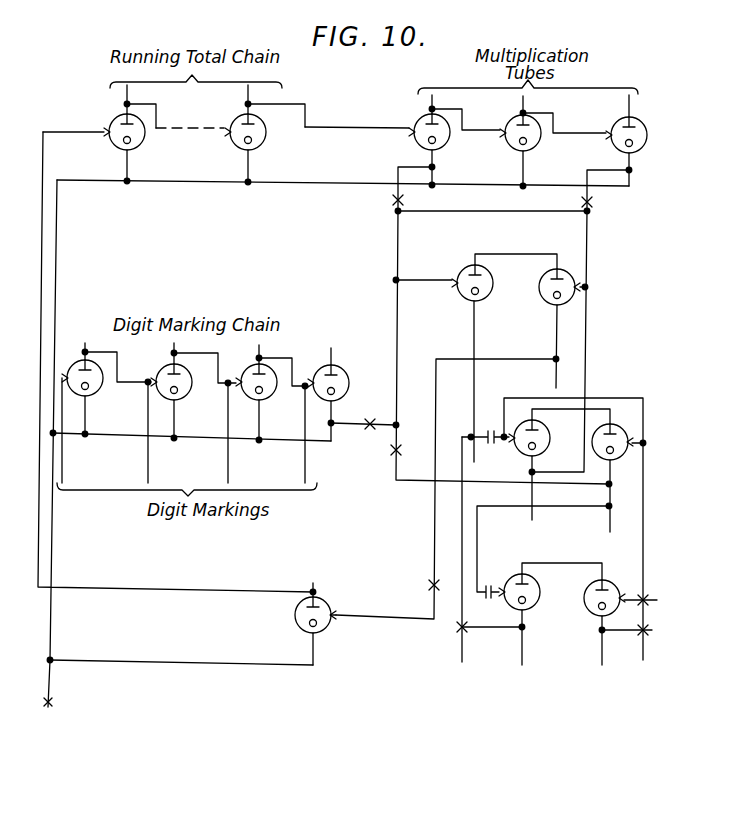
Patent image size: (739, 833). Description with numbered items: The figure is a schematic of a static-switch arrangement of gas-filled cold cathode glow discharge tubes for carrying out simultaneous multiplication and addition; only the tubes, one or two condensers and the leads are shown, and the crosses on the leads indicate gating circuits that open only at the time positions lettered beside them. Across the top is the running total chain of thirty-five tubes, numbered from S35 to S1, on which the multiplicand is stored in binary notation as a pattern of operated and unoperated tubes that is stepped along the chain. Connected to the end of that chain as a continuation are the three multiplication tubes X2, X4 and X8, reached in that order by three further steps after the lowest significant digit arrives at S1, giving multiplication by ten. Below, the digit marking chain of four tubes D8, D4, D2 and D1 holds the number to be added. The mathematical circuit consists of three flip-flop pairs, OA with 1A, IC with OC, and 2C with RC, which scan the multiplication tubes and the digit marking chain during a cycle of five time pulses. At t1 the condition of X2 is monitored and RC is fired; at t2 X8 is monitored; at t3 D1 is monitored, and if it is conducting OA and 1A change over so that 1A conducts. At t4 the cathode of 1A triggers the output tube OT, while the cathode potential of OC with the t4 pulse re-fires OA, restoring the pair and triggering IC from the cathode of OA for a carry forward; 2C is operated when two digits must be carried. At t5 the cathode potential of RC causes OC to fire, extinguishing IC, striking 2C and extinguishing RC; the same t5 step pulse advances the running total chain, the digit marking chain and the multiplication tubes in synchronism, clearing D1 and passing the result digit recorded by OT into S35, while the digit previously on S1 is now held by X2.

The running total chain tube S35 is at (133, 134).
The running total chain tube S1 is at (265, 135).
The multiplication tube X2 is at (449, 150).
The multiplication tube X4 is at (553, 139).
The multiplication tube X8 is at (625, 151).
The mathematical circuit tube OA is at (476, 355).
The mathematical circuit tube 1A is at (562, 318).
The carry tube IC is at (558, 462).
The mathematical circuit tube OC is at (616, 468).
The carry tube 2C is at (545, 612).
The mathematical circuit tube RC is at (609, 614).
The digit marking tube D8 is at (106, 390).
The digit marking tube D4 is at (193, 392).
The digit marking tube D2 is at (272, 394).
The digit marking tube D1 is at (334, 394).
The output tube OT is at (301, 624).
The time pulse position t1 is at (535, 401).
The time pulse position t2 is at (598, 203).
The time pulse position t3 is at (378, 413).
The time pulse position t4 is at (400, 517).
The step pulse t5 is at (342, 696).